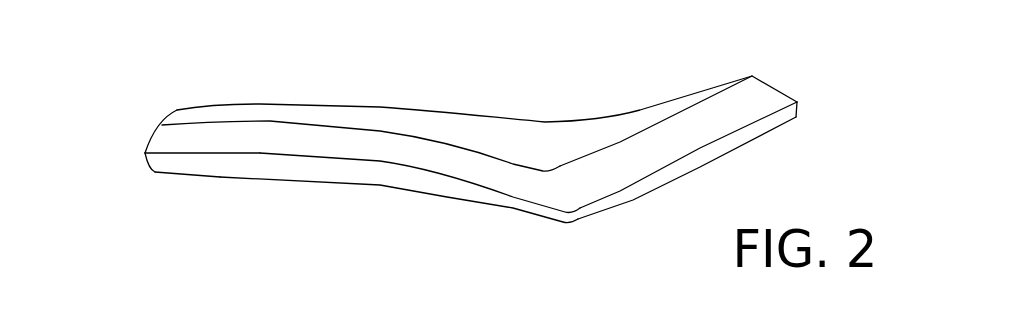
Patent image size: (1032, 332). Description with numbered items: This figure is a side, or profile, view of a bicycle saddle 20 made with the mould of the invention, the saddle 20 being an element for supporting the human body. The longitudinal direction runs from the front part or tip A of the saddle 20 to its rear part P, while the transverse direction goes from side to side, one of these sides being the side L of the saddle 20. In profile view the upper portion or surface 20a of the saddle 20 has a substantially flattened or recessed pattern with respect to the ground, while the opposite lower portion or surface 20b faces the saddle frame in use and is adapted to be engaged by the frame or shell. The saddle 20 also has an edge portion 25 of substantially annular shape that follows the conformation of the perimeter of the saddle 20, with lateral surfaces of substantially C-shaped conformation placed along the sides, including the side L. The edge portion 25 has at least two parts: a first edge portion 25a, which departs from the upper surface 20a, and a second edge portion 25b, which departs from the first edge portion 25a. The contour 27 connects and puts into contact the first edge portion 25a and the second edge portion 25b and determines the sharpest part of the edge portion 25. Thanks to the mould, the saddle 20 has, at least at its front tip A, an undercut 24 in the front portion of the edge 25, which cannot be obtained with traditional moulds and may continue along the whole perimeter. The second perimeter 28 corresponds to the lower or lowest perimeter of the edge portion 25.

The saddle 20 is at (821, 115).
The upper portion or surface 20a is at (516, 114).
The lower portion or surface 20b is at (526, 221).
The undercut 24 is at (153, 175).
The edge portion 25 is at (391, 190).
The first edge portion 25a is at (758, 90).
The second edge portion 25b is at (761, 127).
The contour 27 is at (136, 154).
The second perimeter 28 is at (160, 177).
The front part (tip) A is at (178, 110).
The rear part P is at (815, 97).
The side L is at (646, 198).